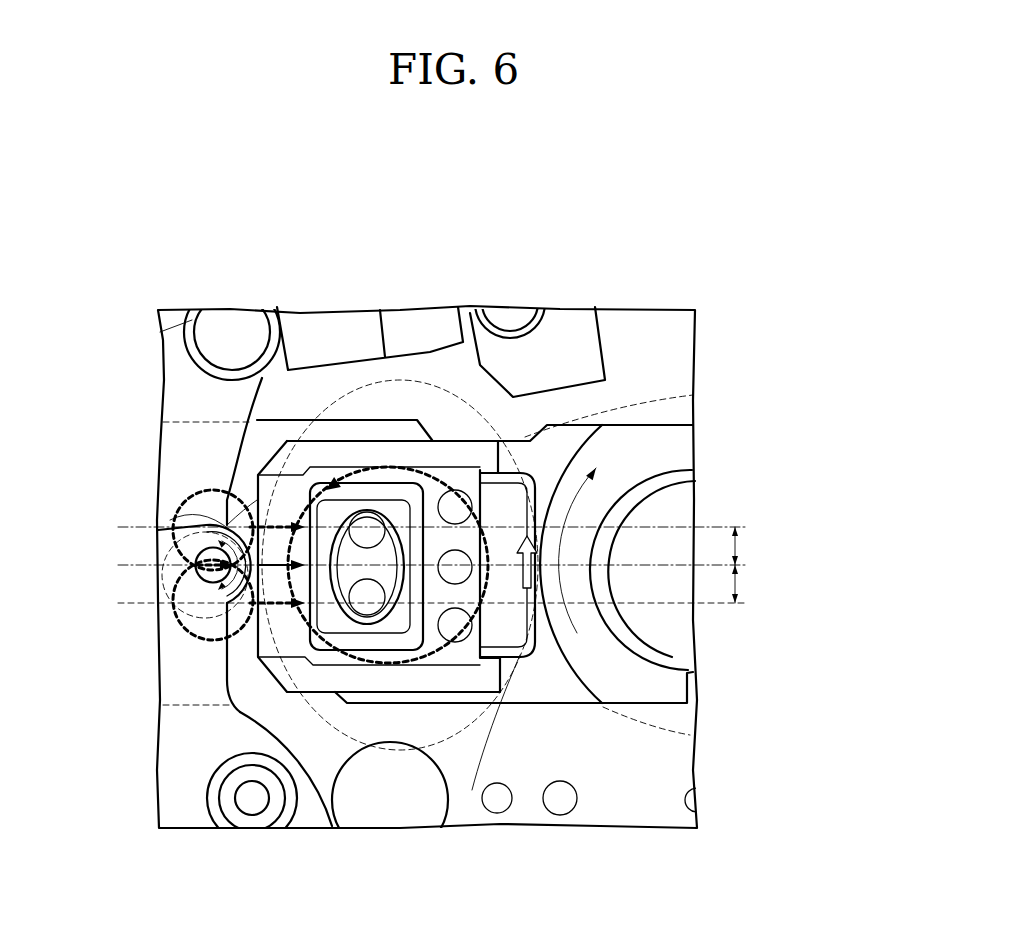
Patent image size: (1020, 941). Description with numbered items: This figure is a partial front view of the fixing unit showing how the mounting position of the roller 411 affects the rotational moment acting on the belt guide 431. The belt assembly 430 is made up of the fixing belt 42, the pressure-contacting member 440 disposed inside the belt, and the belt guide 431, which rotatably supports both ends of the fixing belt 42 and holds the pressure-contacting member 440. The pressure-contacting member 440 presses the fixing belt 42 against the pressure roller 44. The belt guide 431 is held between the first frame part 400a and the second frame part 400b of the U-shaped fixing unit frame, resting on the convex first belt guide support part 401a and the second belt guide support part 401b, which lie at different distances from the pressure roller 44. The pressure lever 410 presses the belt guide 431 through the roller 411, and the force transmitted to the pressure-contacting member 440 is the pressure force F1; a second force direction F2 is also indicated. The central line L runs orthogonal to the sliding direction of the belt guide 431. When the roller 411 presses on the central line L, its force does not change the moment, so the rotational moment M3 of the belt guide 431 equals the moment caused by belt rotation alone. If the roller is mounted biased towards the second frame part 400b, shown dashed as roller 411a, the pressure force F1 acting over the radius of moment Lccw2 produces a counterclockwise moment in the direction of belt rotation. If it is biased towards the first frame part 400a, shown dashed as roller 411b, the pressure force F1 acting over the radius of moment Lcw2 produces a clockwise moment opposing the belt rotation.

The first frame part 400a is at (348, 378).
The second frame part 400b is at (357, 660).
The pressure lever 410 is at (183, 441).
The belt assembly 430 is at (280, 440).
The belt guide 431 is at (260, 727).
The first belt guide support part 401a is at (503, 433).
The second belt guide support part 401b is at (272, 698).
The roller 411 is at (185, 565).
The roller (position biased towards second frame part) 411a is at (190, 636).
The roller (position biased towards first frame part) 411b is at (190, 488).
The rotational moment of the belt guide M3 is at (453, 490).
The pressure force F1 is at (225, 522).
The force direction F2 is at (528, 590).
The fixing belt 42 is at (527, 678).
The pressure-contacting member 440 is at (472, 790).
The pressure roller 44 is at (690, 623).
The central line L is at (745, 564).
The radius of moment (clockwise) Lcw2 is at (735, 551).
The radius of moment (counterclockwise) Lccw2 is at (733, 580).